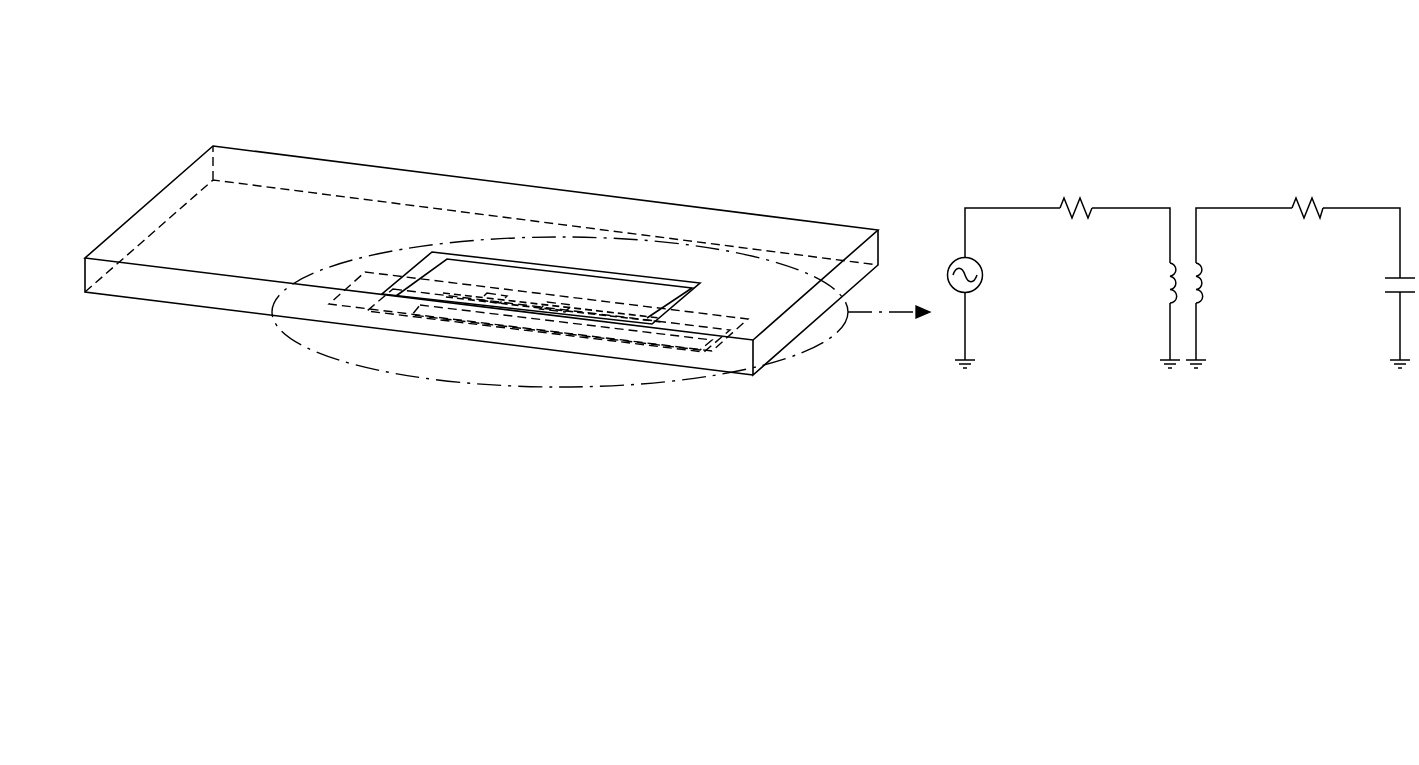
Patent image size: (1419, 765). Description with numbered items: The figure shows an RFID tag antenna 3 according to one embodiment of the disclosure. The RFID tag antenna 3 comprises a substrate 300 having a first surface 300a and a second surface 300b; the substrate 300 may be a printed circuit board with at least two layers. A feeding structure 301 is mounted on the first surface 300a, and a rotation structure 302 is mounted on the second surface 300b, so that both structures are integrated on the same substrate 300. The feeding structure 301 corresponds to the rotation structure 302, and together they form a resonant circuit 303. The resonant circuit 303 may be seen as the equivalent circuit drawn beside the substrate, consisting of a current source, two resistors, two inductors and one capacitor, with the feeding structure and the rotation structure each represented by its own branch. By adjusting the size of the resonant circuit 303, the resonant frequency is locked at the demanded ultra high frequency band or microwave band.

The RFID tag antenna 3 is at (258, 114).
The substrate 300 is at (548, 186).
The first surface 300a is at (243, 245).
The second surface 300b is at (868, 282).
The feeding structure 301 is at (600, 278).
The rotation structure 302 is at (608, 342).
The resonant circuit 303 is at (452, 386).